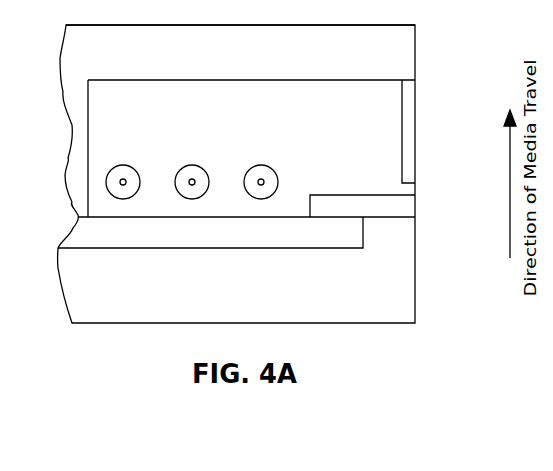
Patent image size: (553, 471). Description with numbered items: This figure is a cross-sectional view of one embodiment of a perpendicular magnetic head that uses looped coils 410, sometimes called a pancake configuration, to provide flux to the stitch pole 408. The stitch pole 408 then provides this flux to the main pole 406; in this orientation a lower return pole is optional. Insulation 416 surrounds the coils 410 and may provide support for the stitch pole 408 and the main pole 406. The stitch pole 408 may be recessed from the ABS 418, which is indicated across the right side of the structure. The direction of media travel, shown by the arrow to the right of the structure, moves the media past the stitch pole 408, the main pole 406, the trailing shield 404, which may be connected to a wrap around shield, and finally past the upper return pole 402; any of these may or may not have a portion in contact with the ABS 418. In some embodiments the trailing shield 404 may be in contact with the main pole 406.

The upper return pole 402 is at (325, 60).
The trailing shield 404 is at (416, 110).
The main pole 406 is at (416, 202).
The stitch pole 408 is at (271, 241).
The looped coils 410 is at (123, 165).
The insulation 416 is at (363, 155).
The ABS 418 is at (417, 43).